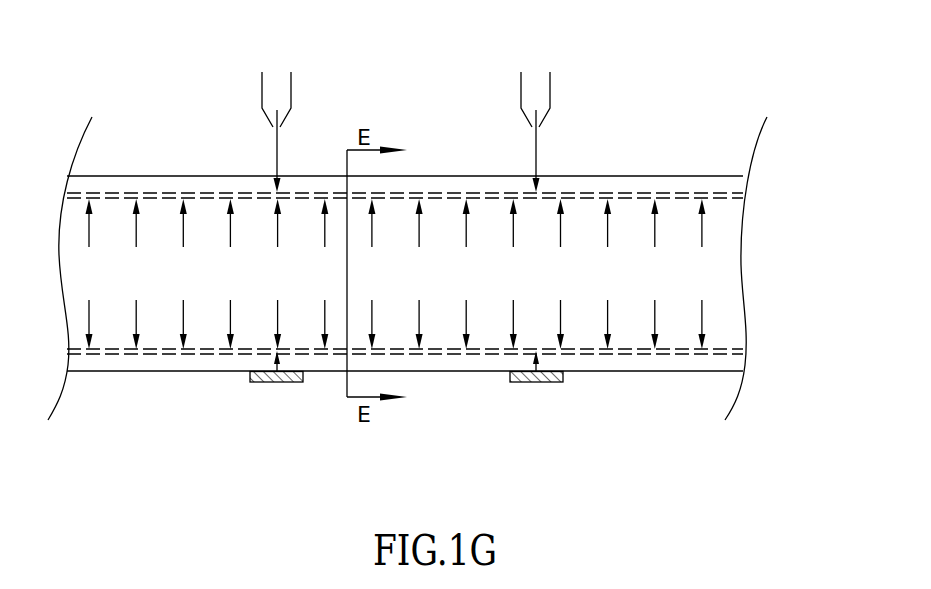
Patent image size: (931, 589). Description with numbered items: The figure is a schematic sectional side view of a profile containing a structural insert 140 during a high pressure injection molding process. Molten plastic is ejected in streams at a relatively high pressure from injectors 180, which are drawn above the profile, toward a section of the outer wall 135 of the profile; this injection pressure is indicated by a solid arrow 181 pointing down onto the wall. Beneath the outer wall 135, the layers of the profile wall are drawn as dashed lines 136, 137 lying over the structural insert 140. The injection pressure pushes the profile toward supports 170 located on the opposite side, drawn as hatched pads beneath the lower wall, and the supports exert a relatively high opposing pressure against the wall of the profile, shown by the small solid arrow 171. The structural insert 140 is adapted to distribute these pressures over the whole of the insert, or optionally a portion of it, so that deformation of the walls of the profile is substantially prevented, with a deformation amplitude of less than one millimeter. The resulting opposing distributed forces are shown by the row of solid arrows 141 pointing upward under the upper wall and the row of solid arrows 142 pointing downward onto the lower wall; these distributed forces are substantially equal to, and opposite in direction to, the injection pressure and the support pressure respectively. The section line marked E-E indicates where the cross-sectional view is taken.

The outer wall 135 is at (610, 175).
The upper layer boundary 136 is at (573, 194).
The lower layer boundary 137 is at (685, 197).
The structural insert 140 is at (697, 273).
The solid arrows 141 is at (230, 235).
The solid arrows 142 is at (467, 312).
The supports 170 is at (273, 383).
The solid arrow 171 is at (535, 363).
The injectors 180 is at (292, 88).
The solid arrow 181 is at (533, 150).